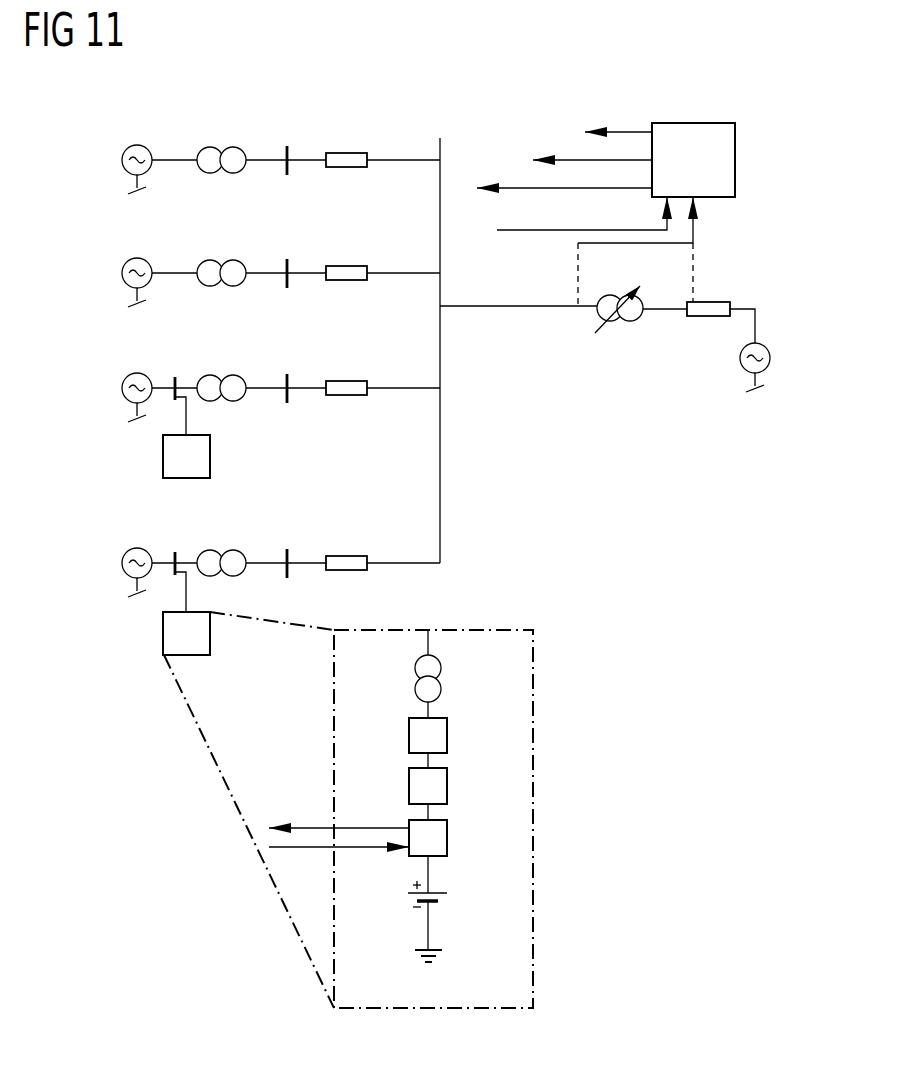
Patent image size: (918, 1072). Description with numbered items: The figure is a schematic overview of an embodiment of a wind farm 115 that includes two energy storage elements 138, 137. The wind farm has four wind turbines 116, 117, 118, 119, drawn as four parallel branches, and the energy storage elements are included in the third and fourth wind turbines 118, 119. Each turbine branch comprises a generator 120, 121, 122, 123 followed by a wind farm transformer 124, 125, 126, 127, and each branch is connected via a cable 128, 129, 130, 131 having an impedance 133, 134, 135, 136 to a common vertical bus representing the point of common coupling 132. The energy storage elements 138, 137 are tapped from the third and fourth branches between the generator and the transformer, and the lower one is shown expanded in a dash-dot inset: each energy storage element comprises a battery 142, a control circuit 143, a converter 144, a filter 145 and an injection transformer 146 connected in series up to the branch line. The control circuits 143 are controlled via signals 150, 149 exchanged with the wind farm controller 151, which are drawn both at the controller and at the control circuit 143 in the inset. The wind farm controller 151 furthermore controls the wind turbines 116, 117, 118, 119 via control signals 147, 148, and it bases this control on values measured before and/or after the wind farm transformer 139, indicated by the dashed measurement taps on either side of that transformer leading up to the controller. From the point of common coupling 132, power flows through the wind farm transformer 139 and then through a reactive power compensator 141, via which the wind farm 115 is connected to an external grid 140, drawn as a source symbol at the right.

The wind farm 115 is at (754, 98).
The wind turbine 116 is at (104, 151).
The wind turbine 117 is at (104, 264).
The wind turbine 118 is at (104, 379).
The wind turbine 119 is at (104, 555).
The generator 120 is at (135, 143).
The generator 121 is at (135, 256).
The generator 122 is at (135, 371).
The generator 123 is at (135, 547).
The wind farm transformer 124 is at (222, 147).
The wind farm transformer 125 is at (222, 260).
The wind farm transformer 126 is at (222, 375).
The wind farm transformer 127 is at (222, 550).
The cable 128 is at (287, 145).
The cable 129 is at (287, 258).
The cable 130 is at (287, 373).
The cable 131 is at (287, 548).
The point of common coupling 132 is at (440, 138).
The impedance 133 is at (347, 152).
The impedance 134 is at (360, 265).
The impedance 135 is at (360, 380).
The impedance 136 is at (360, 555).
The energy storage element 137 is at (163, 635).
The energy storage element 138 is at (163, 457).
The wind farm transformer 139 is at (618, 325).
The external grid 140 is at (740, 359).
The reactive power compensator 141 is at (708, 300).
The battery 142 is at (440, 895).
The control circuit 143 is at (447, 838).
The converter 144 is at (447, 787).
The filter 145 is at (447, 735).
The injection transformer 146 is at (441, 680).
The control signal 147 is at (625, 128).
The control signal 148 is at (573, 155).
The signal 149 is at (515, 185).
The signal 150 is at (530, 233).
The wind farm controller 151 is at (735, 160).